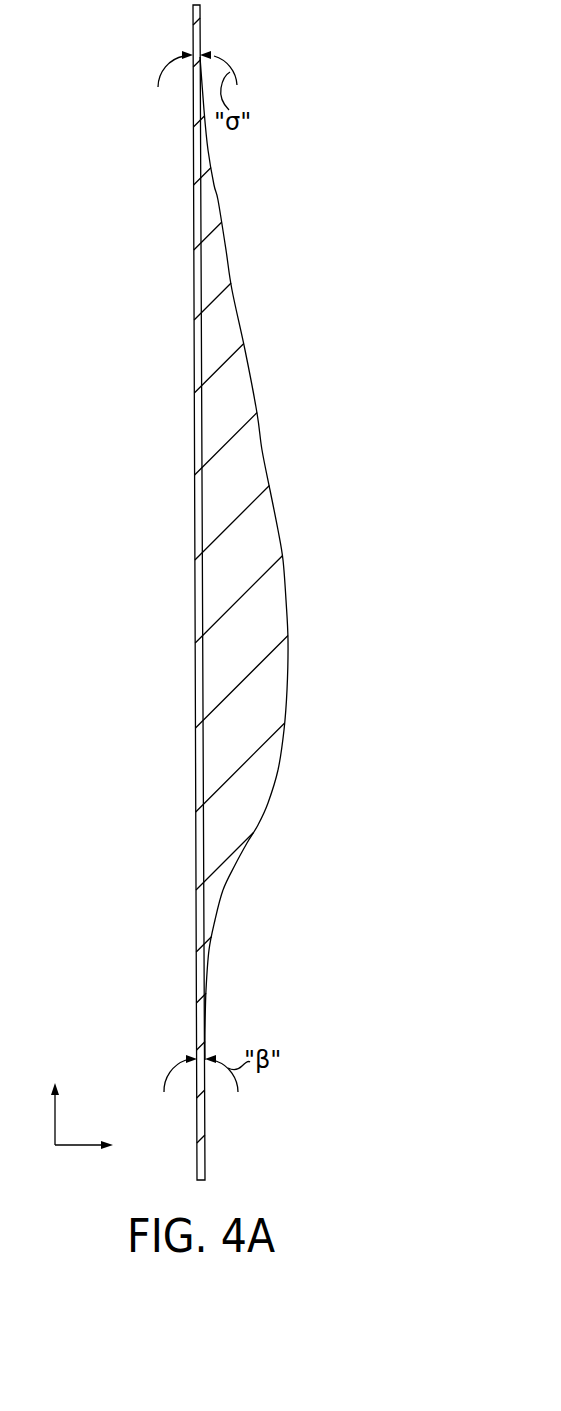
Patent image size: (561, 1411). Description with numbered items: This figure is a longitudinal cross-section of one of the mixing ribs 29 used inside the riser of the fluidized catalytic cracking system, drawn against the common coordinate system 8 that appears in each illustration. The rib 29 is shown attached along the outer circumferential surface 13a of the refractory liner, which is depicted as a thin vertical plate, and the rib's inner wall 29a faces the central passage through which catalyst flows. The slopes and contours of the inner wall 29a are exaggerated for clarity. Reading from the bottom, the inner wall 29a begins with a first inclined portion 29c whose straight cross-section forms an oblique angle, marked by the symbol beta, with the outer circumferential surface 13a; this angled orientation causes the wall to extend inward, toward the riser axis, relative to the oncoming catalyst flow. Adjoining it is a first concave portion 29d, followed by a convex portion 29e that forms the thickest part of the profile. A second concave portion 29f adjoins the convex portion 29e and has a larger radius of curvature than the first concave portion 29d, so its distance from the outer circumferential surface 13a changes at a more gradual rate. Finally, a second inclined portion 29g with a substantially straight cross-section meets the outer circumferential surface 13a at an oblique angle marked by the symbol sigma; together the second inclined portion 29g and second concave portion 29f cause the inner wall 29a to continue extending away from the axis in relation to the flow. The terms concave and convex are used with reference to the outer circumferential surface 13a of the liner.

The outer circumferential surface of the liner 13a is at (195, 448).
The mixing rib 29 is at (273, 579).
The inner wall 29a is at (302, 544).
The first inclined portion 29c is at (206, 1022).
The first concave portion 29d is at (246, 845).
The convex portion 29e is at (286, 623).
The second concave portion 29f is at (230, 275).
The second inclined portion 29g is at (200, 33).
The coordinate system 8 is at (55, 1147).